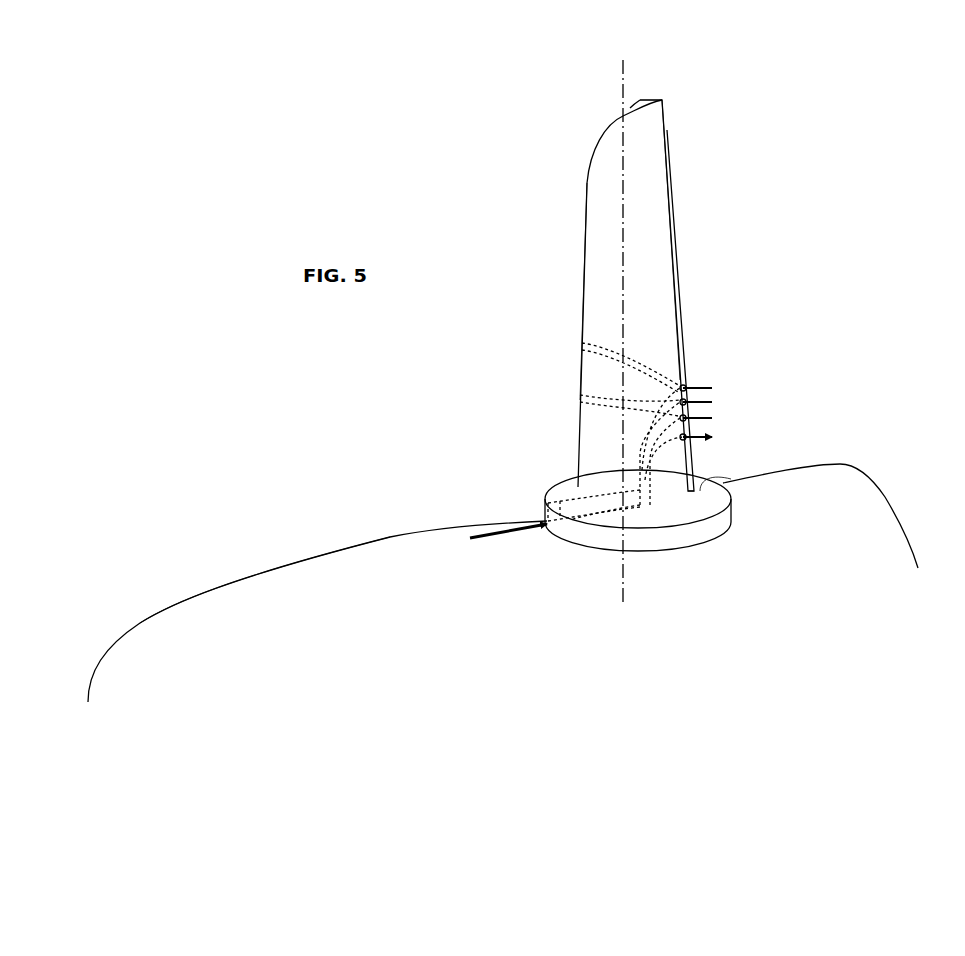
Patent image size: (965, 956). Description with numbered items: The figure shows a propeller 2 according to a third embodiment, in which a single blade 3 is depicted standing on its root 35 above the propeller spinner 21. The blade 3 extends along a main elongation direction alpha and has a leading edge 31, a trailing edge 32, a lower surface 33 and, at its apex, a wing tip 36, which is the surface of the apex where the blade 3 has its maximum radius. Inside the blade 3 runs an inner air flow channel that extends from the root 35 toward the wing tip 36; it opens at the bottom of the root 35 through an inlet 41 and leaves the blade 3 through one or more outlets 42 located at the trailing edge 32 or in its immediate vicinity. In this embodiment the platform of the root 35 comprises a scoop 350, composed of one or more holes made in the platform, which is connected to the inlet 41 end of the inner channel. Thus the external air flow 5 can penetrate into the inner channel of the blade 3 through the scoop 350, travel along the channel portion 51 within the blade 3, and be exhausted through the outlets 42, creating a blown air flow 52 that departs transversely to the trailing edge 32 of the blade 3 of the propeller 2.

The propeller 2 is at (409, 531).
The propeller spinner 21 is at (285, 582).
The blade 3 is at (690, 220).
The leading edge 31 is at (585, 203).
The trailing edge 32 is at (700, 460).
The lower surface 33 is at (655, 272).
The root 35 is at (722, 484).
The wing tip 36 is at (640, 100).
The main elongation direction alpha is at (625, 75).
The inlet 41 is at (611, 530).
The outlet 42 is at (582, 345).
The external air flow 5 is at (520, 524).
The scoop 350 is at (548, 528).
The collector channel 51 is at (637, 481).
The blown air flow 52 is at (716, 383).